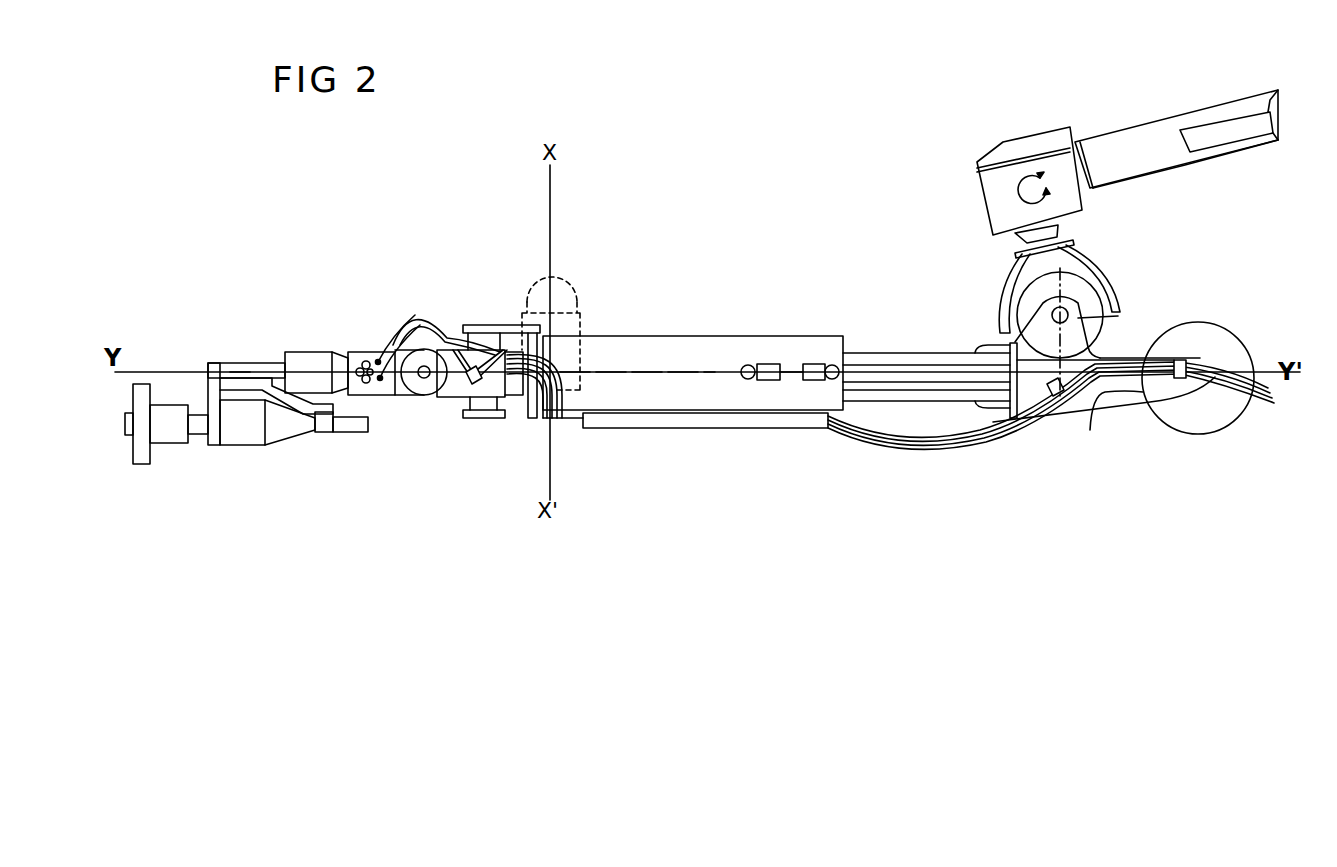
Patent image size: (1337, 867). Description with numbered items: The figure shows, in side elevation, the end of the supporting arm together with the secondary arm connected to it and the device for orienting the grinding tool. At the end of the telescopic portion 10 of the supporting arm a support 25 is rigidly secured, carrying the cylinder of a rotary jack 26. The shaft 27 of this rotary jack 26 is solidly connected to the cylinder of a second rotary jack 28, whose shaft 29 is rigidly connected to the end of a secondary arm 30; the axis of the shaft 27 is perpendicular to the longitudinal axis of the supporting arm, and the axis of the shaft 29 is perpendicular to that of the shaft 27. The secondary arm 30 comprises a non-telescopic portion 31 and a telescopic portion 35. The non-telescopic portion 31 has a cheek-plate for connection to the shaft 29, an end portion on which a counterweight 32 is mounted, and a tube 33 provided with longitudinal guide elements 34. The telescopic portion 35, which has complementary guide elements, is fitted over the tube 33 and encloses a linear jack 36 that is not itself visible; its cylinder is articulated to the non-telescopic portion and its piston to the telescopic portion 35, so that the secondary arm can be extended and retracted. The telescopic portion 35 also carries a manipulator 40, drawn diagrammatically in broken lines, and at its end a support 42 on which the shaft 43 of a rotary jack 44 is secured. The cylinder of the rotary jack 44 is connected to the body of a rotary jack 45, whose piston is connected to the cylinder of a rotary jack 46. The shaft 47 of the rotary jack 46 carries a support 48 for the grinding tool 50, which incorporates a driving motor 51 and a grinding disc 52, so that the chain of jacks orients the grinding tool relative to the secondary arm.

The telescopic portion 10 is at (1120, 145).
The support 25 is at (1042, 140).
The rotary jack 26 is at (992, 200).
The shaft 27 is at (1060, 222).
The rotary jack 28 is at (1068, 257).
The shaft 29 is at (1080, 312).
The secondary arm 30 is at (910, 393).
The non-telescopic portion 31 is at (1090, 430).
The counterweight 32 is at (1205, 418).
The tube 33 is at (857, 360).
The longitudinal guide elements 34 is at (918, 380).
The telescopic portion 35 is at (695, 356).
The linear jack 36 is at (636, 352).
The manipulator 40 is at (568, 326).
The support 42 is at (493, 345).
The shaft 43 is at (488, 418).
The rotary jack 44 is at (468, 350).
The rotary jack 45 is at (424, 350).
The rotary jack 46 is at (368, 350).
The shaft 47 is at (256, 364).
The support 48 is at (302, 353).
The grinding tool 50 is at (248, 440).
The driving motor 51 is at (292, 438).
The grinding disc 52 is at (145, 450).